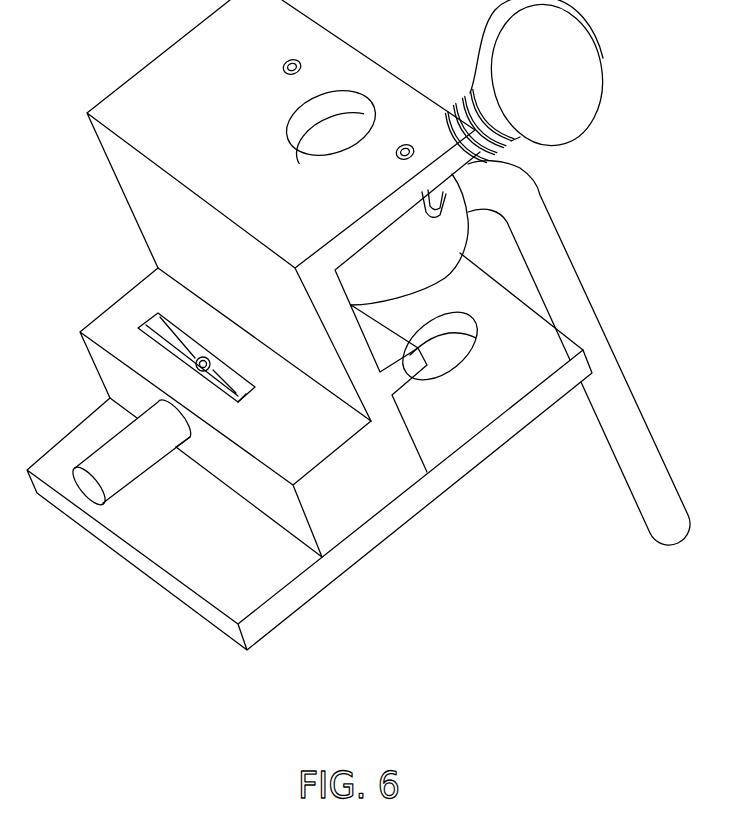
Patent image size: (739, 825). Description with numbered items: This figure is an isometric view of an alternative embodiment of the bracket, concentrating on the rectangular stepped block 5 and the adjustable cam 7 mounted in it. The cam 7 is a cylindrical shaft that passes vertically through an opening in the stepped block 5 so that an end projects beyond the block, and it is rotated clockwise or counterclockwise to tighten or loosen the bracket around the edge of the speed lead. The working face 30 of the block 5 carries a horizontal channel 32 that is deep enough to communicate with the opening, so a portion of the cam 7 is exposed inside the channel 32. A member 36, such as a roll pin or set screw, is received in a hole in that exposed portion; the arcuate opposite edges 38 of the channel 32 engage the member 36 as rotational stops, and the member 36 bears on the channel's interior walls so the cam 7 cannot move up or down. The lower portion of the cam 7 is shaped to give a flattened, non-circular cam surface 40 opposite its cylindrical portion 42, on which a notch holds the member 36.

The rectangular stepped block 5 is at (358, 504).
The working face 30 is at (330, 442).
The horizontal channel 32 is at (220, 392).
The member 36 is at (215, 366).
The arcuate edges 38 is at (157, 328).
The cam surface 40 is at (142, 481).
The cylindrical portion 42 is at (114, 480).
The cam 7 is at (84, 491).